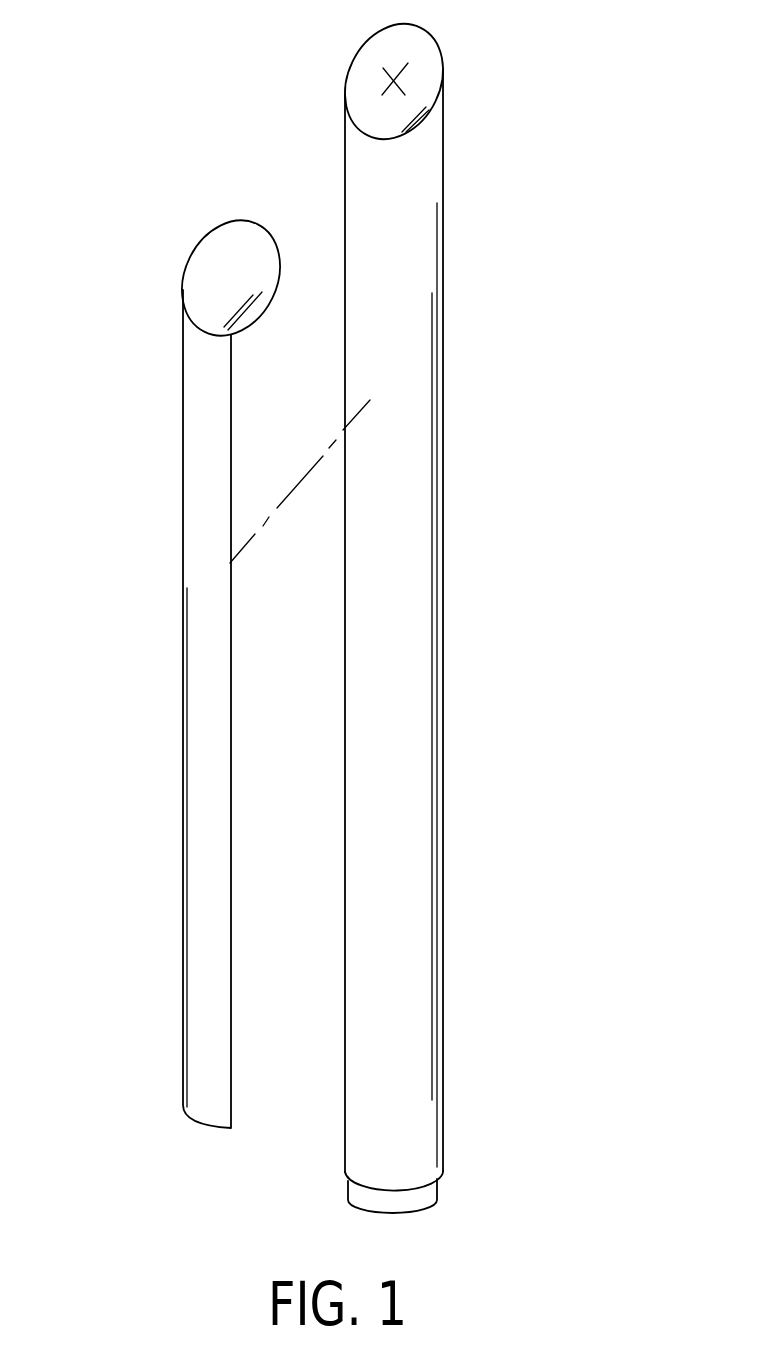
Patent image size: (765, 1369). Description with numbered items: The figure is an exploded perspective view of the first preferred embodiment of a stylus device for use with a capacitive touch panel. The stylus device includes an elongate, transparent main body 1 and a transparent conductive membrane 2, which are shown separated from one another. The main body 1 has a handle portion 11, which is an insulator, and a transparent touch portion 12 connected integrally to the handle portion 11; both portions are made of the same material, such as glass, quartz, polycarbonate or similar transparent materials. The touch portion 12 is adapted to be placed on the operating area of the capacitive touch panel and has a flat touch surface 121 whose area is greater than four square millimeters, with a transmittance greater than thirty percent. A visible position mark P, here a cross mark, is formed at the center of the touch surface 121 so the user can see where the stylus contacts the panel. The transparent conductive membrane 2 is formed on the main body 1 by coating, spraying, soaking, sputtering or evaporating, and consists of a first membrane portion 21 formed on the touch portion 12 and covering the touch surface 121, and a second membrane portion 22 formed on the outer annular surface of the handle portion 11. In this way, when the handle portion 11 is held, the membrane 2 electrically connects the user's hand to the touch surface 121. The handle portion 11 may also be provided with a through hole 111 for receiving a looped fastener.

The main body 1 is at (385, 609).
The handle portion 11 is at (389, 641).
The through hole 111 is at (352, 160).
The transparent touch portion 12 is at (385, 85).
The touch surface 121 is at (360, 70).
The position mark P is at (395, 82).
The transparent conductive membrane 2 is at (169, 666).
The first membrane portion 21 is at (193, 282).
The second membrane portion 22 is at (193, 382).